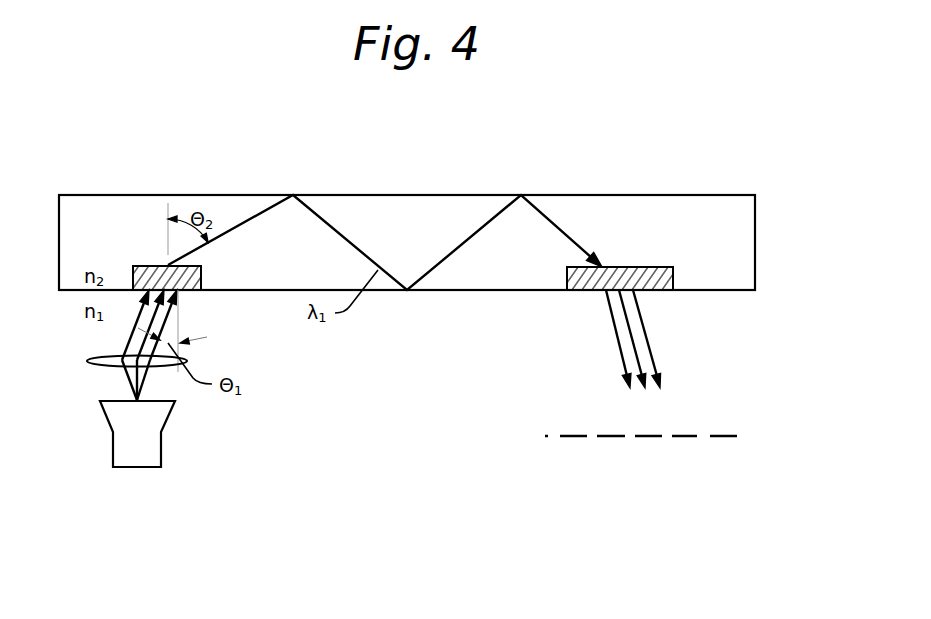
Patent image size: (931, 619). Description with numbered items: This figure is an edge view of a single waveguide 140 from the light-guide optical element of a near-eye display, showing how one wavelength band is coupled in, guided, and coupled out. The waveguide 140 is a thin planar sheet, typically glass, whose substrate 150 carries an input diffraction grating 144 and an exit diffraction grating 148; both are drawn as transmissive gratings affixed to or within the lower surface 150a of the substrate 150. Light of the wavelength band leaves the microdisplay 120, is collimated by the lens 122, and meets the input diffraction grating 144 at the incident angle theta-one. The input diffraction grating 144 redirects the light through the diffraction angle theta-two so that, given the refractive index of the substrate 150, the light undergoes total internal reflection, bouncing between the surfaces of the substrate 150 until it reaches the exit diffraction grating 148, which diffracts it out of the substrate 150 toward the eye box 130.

The microdisplay 120 is at (160, 435).
The lens 122 is at (87, 361).
The eye box 130 is at (697, 436).
The waveguide 140 is at (707, 135).
The input diffraction grating 144 is at (153, 265).
The exit diffraction grating 148 is at (575, 291).
The substrate 150 is at (723, 196).
The lower surface 150a is at (717, 290).